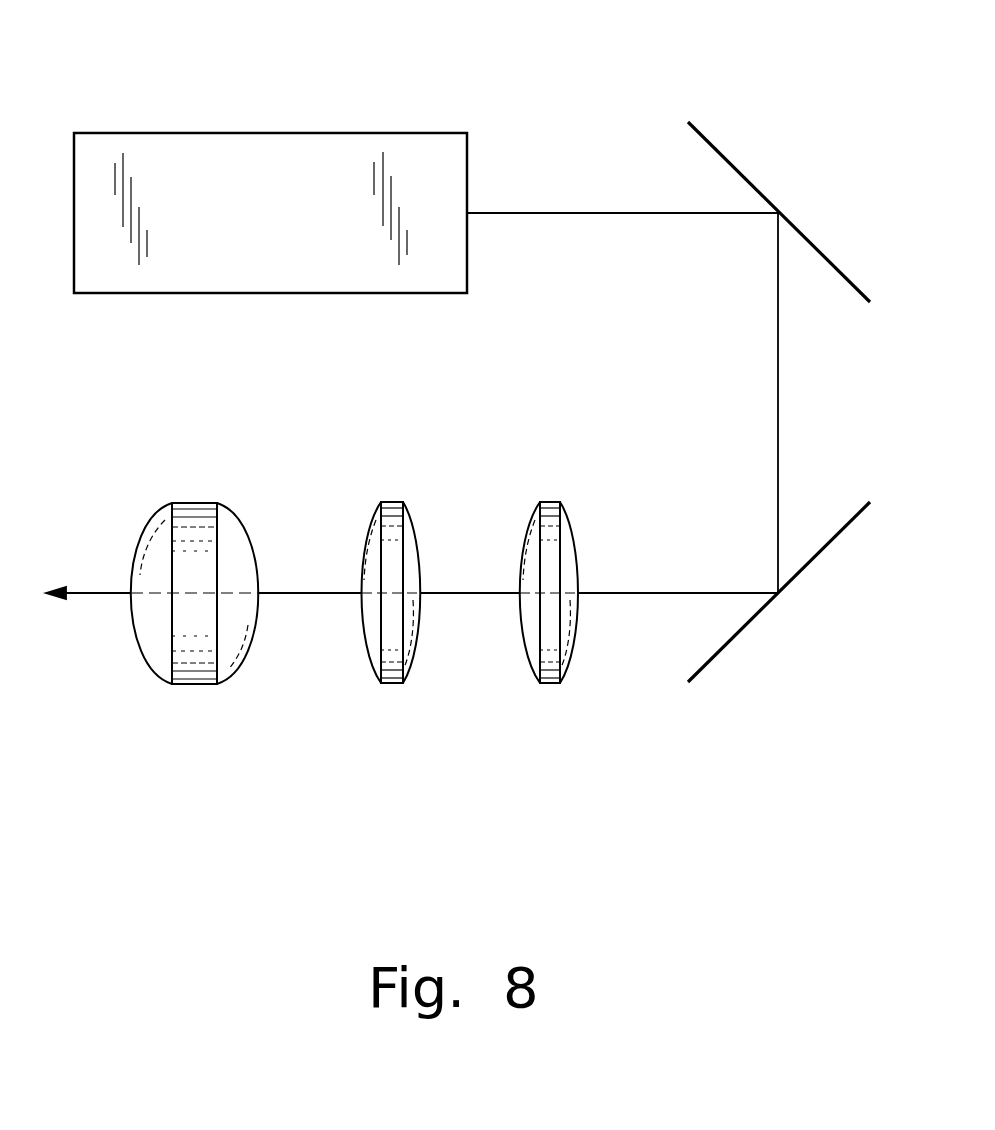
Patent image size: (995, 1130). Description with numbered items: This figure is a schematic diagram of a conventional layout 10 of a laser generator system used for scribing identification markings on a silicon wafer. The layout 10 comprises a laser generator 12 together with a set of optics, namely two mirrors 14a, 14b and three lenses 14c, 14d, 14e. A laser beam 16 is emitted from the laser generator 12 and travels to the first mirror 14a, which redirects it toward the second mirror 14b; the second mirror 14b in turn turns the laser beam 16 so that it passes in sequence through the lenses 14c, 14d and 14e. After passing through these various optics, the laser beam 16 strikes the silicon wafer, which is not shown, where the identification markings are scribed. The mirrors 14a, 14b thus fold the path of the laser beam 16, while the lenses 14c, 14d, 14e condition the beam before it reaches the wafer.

The conventional layout 10 is at (217, 105).
The laser generator 12 is at (223, 293).
The mirror 14a is at (815, 243).
The mirror 14b is at (815, 560).
The lens 14c is at (568, 668).
The lens 14d is at (408, 668).
The lens 14e is at (235, 668).
The laser beam 16 is at (567, 213).